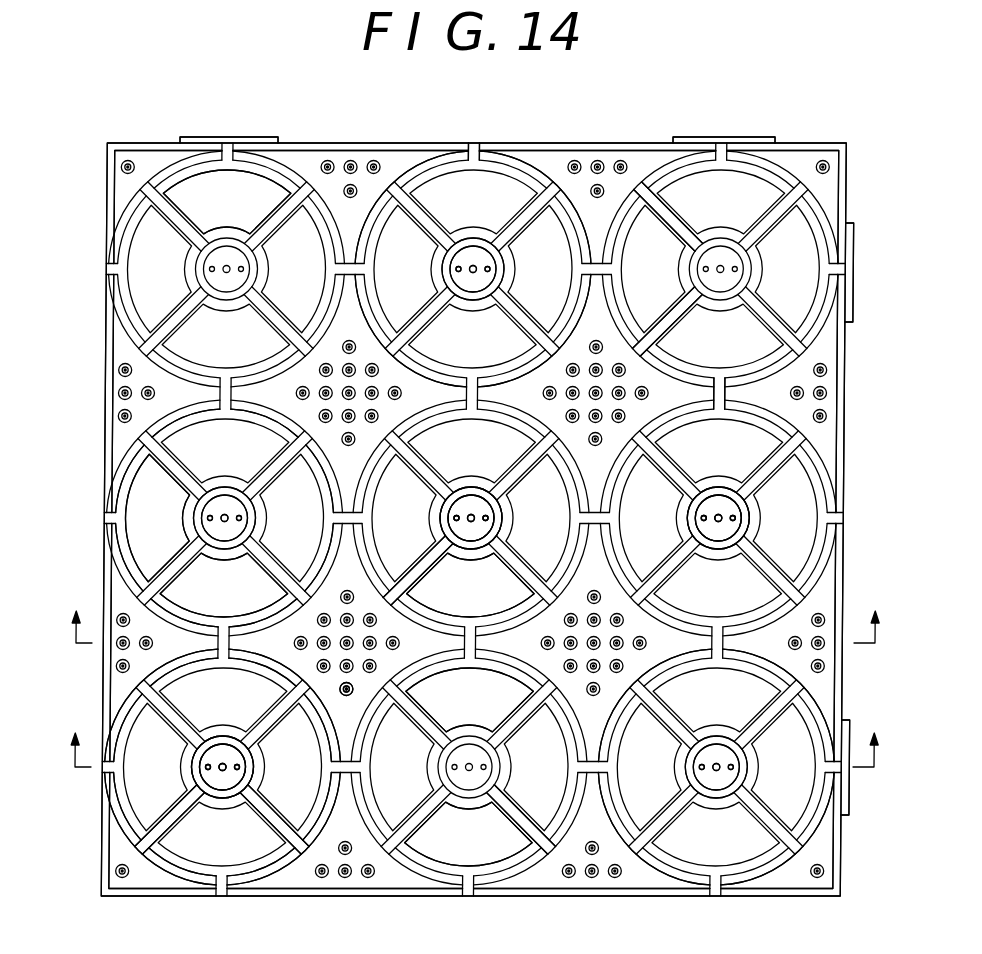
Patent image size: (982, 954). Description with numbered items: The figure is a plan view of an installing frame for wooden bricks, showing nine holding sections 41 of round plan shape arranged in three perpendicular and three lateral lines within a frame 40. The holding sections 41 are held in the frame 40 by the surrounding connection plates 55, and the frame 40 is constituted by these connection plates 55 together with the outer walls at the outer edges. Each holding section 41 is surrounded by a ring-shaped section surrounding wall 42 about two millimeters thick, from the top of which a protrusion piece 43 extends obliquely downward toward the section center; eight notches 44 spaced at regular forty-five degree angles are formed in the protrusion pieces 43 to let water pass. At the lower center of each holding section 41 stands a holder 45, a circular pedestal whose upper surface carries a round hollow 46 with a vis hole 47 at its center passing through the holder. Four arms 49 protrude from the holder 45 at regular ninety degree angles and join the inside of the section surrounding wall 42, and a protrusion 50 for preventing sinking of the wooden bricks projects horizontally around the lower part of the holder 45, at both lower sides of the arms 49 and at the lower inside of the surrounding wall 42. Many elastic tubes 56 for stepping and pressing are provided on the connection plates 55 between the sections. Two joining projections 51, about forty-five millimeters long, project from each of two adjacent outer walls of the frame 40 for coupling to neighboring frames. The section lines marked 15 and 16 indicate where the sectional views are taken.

The frame 40 is at (95, 182).
The holding section 41 is at (265, 197).
The section surrounding wall 42 is at (546, 165).
The protrusion piece 43 is at (338, 500).
The notch 44 is at (474, 158).
The holder 45 is at (472, 557).
The round hollow 46 is at (473, 300).
The vis hole 47 is at (496, 518).
The arm 49 is at (683, 227).
The protrusion for preventing sinking 50 is at (680, 323).
The joining projection 51 is at (201, 137).
The connection plate 55 is at (641, 160).
The elastic tube for stepping and pressing 56 is at (118, 390).
The section line 15- 15 is at (475, 734).
The section line 16- 16 is at (476, 612).